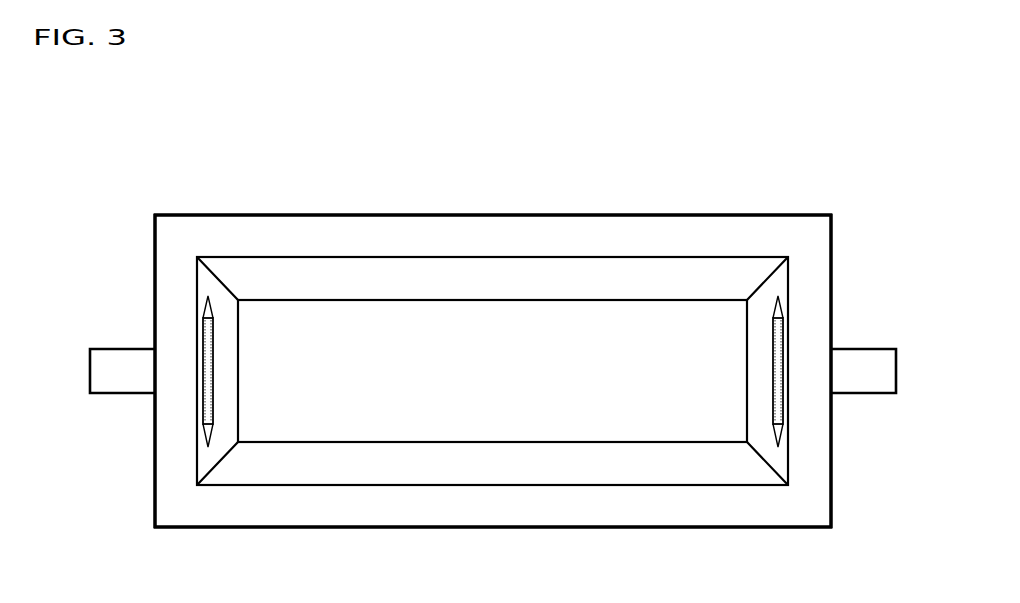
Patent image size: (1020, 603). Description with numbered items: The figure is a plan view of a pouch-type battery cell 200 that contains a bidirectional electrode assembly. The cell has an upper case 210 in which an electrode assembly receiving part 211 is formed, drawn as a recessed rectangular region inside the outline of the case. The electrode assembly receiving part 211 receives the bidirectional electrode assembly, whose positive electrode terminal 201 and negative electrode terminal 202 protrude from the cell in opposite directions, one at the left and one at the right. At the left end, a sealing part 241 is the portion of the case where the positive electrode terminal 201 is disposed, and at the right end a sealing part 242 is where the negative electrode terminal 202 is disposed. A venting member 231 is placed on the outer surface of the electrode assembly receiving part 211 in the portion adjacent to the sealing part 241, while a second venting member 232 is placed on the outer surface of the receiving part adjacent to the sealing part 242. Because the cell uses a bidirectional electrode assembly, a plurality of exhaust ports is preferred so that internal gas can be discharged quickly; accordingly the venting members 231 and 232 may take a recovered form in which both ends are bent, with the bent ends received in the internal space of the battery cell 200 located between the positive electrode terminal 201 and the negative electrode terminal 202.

The pouch-type battery cell 200 is at (207, 133).
The upper case 210 is at (452, 505).
The electrode assembly receiving part 211 is at (335, 340).
The positive electrode terminal 201 is at (120, 393).
The negative electrode terminal 202 is at (865, 393).
The venting member 231 is at (208, 332).
The venting member 232 is at (777, 332).
The sealing part 241 is at (180, 248).
The sealing part 242 is at (803, 507).